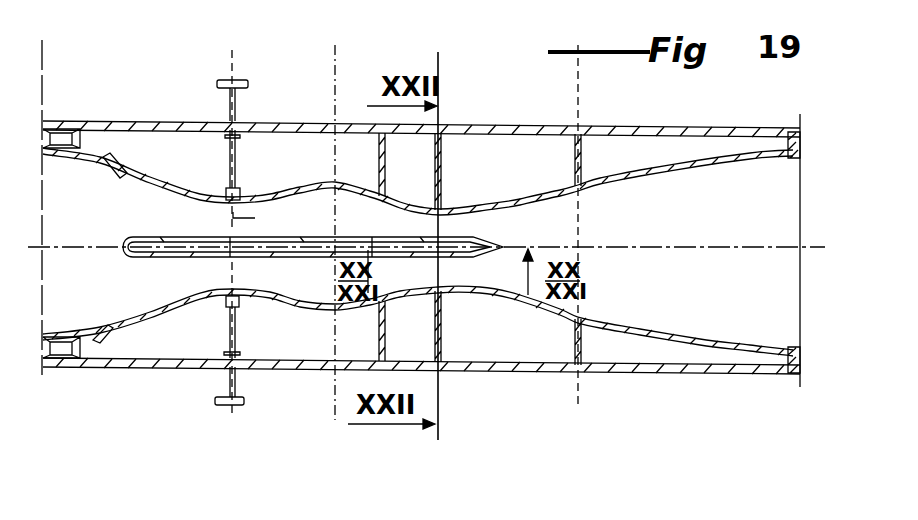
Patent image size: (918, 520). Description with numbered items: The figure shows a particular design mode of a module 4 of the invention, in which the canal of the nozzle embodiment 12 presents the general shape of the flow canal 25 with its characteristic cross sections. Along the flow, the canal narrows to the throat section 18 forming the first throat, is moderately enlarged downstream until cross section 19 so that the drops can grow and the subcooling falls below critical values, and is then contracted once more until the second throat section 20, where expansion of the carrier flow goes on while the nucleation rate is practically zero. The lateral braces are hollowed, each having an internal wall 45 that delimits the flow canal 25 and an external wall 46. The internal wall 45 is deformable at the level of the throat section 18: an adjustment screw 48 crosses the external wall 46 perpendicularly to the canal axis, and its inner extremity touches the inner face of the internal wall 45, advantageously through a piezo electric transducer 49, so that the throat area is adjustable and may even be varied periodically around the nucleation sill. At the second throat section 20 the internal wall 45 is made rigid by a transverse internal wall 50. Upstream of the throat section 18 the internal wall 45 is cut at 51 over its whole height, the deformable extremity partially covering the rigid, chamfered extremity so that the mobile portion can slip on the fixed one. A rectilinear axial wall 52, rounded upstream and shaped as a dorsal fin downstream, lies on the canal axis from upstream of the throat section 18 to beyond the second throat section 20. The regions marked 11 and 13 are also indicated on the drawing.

The module 4 is at (541, 400).
The inlet region 11 is at (112, 215).
The nozzle embodiment 12 is at (172, 93).
The divergent nozzle section 13 is at (603, 103).
The throat section 18 is at (255, 218).
The cross section 19 is at (336, 96).
The second throat section 20 is at (434, 278).
The flow canal 25 is at (573, 229).
The internal wall 45 is at (572, 198).
The external wall 46 is at (526, 128).
The adjustment screw 48 is at (238, 108).
The piezo electric transducer 49 is at (226, 190).
The transverse internal wall 50 is at (442, 167).
The cut 51 is at (122, 165).
The axial wall 52 is at (312, 260).